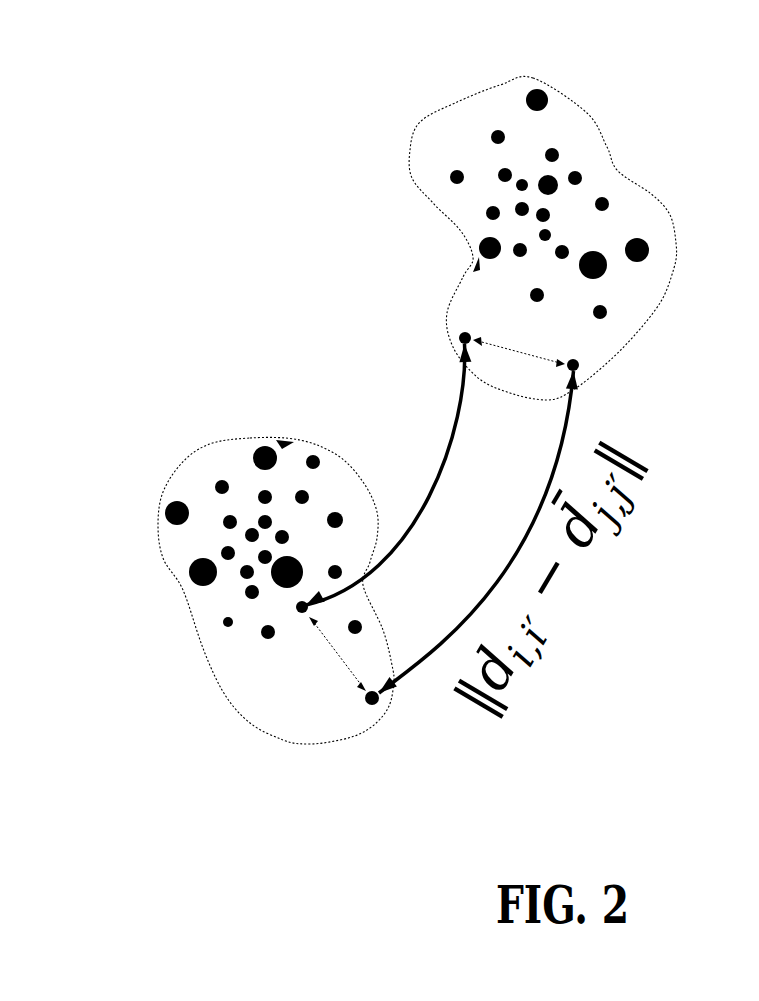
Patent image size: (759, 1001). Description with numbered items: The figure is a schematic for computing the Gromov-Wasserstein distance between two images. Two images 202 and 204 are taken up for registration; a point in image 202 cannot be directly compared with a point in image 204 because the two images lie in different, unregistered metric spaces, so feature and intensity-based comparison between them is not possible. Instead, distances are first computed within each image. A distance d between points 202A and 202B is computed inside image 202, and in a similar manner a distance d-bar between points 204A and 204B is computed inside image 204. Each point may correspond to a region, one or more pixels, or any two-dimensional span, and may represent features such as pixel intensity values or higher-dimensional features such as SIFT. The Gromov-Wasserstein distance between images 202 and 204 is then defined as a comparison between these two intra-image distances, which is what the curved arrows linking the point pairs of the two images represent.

The image 202 is at (170, 483).
The point 202A is at (297, 610).
The point 202B is at (366, 706).
The image 204 is at (558, 80).
The point 204A is at (460, 336).
The point 204B is at (580, 362).